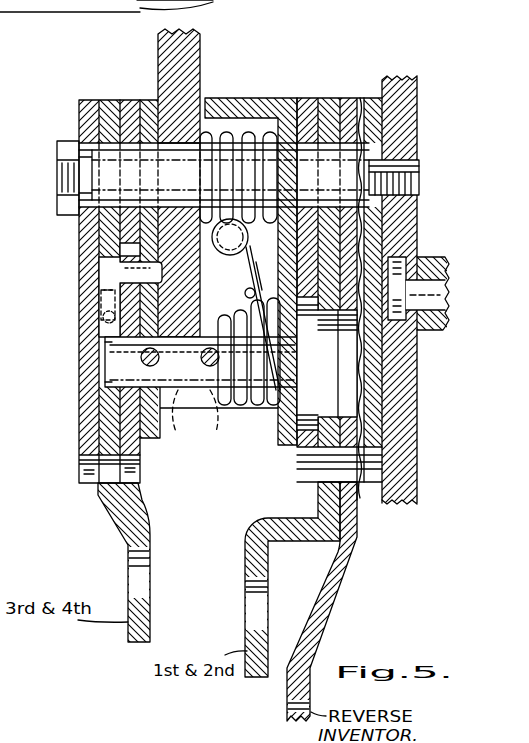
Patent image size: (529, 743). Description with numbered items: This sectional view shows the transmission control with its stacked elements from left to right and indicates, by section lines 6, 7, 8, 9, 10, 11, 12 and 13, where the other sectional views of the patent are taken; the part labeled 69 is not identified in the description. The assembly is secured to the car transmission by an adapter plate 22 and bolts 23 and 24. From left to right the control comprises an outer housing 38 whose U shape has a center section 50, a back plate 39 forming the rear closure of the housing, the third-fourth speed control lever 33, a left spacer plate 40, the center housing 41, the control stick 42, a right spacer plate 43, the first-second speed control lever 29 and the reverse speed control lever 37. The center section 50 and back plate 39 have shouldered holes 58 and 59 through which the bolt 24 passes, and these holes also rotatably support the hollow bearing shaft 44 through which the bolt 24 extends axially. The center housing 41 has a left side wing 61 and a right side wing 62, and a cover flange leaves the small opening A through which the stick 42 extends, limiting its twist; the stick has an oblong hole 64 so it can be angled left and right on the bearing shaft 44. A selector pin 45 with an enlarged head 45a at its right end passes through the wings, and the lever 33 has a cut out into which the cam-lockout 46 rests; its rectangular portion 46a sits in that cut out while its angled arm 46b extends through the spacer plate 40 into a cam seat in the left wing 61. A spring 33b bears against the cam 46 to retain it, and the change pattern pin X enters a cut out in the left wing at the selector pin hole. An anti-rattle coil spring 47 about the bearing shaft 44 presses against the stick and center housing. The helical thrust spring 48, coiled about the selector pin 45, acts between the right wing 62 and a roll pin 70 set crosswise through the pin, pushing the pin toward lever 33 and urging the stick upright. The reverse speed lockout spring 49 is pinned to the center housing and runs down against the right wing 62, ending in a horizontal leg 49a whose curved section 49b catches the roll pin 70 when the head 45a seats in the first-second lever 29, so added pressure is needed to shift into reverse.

The section line 6 is at (97, 73).
The section line 7 is at (118, 55).
The section line 8 is at (137, 33).
The section line 9 is at (158, 22).
The section line 10 is at (203, 92).
The section line 11 is at (297, 98).
The section line 12 is at (314, 76).
The section line 13 is at (336, 58).
The adapter plate 22 is at (405, 410).
The bolt 23 is at (436, 292).
The bolt 24 is at (57, 172).
The first-second speed control lever 29 is at (248, 553).
The third-fourth speed control lever 33 is at (150, 608).
The spring 33b is at (92, 300).
The reverse speed control lever 37 is at (325, 618).
The outer housing 38 is at (79, 376).
The back plate 39 is at (375, 98).
The left spacer plate 40 is at (131, 100).
The center housing 41 is at (240, 100).
The control stick 42 is at (198, 38).
The right spacer plate 43 is at (304, 100).
The bearing shaft 44 is at (190, 183).
The selector pin 45 is at (165, 361).
The enlarged head 45a is at (313, 358).
The cam-lockout 46 is at (112, 270).
The rectangular portion 46a is at (105, 320).
The angled arm 46b is at (118, 256).
The anti-rattle coil spring 47 is at (230, 237).
The helical thrust spring 48 is at (245, 296).
The reverse speed lockout spring 49 is at (255, 273).
The horizontal leg 49a is at (177, 418).
The curved section 49b is at (228, 418).
The center section 50 is at (79, 228).
The shouldered hole 58 is at (95, 147).
The shouldered hole 59 is at (384, 122).
The left side wing 61 is at (148, 100).
The right side wing 62 is at (250, 256).
The hole 64 is at (224, 175).
The gasket 69 is at (360, 98).
The roll pin 70 is at (221, 347).
The opening A is at (204, 96).
The change pattern pin X is at (161, 357).